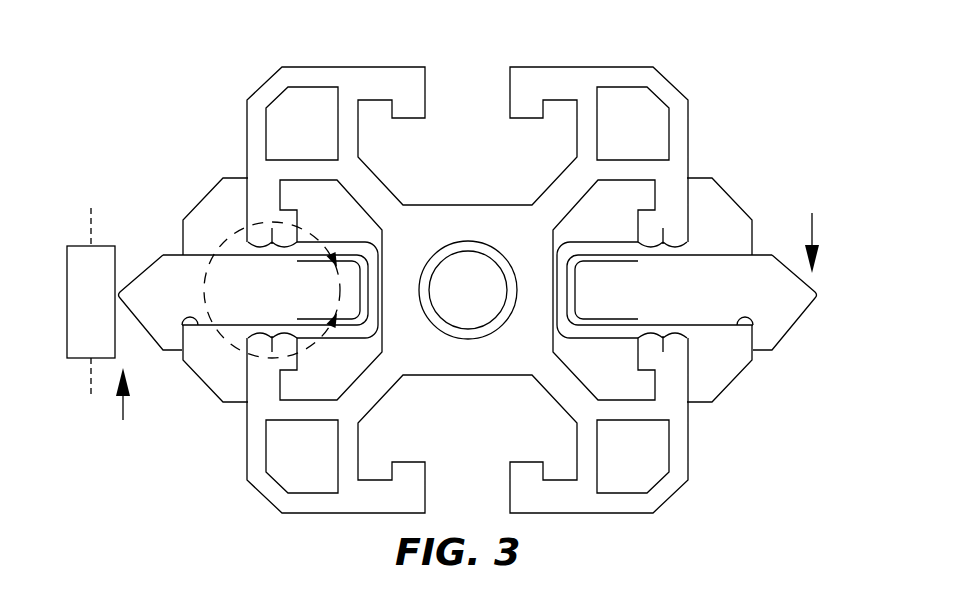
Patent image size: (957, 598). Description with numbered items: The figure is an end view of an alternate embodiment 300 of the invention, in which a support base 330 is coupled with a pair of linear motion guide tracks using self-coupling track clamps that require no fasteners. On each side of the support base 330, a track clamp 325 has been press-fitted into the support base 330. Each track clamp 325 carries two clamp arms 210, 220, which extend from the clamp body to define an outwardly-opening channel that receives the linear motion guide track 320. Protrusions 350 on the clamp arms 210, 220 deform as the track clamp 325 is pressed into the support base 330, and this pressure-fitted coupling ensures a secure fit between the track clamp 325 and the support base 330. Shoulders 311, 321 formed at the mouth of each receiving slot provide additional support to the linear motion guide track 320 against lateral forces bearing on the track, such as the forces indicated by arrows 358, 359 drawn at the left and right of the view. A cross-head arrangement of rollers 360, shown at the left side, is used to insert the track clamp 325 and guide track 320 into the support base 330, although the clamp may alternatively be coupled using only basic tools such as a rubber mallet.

The alternate embodiment 300 is at (160, 33).
The support base 330 is at (668, 77).
The shoulder 311 is at (238, 228).
The shoulder 321 is at (238, 372).
The protrusions 350 is at (270, 240).
The clamp arm 220 is at (318, 334).
The clamp arm 210 is at (245, 250).
The linear motion guide track 320 is at (126, 293).
The track clamp 325 is at (235, 390).
The rollers 360 is at (103, 246).
The arrow 358 is at (121, 418).
The arrow 359 is at (815, 232).